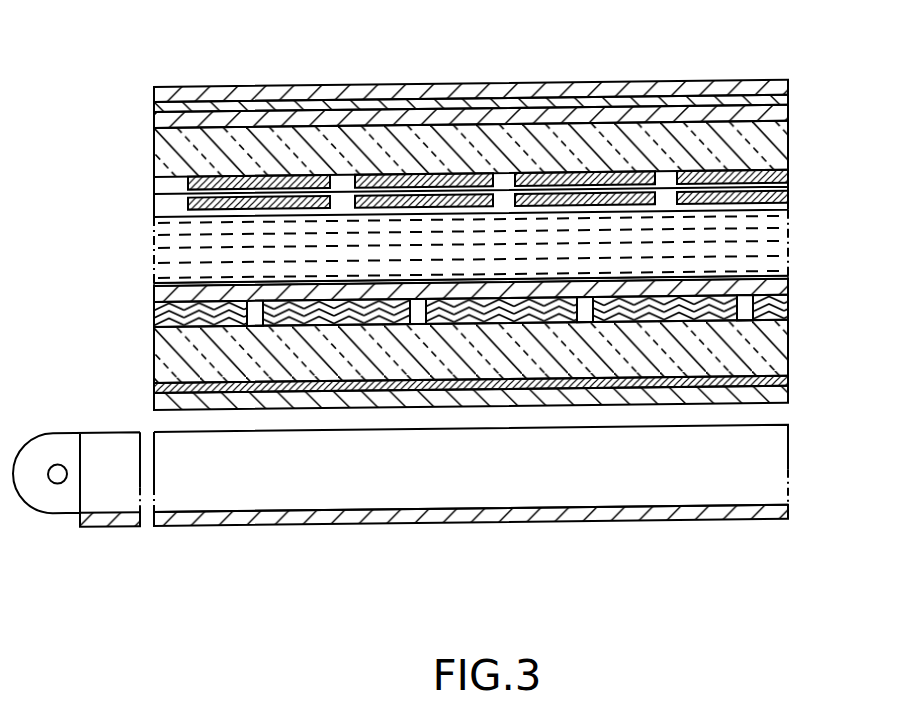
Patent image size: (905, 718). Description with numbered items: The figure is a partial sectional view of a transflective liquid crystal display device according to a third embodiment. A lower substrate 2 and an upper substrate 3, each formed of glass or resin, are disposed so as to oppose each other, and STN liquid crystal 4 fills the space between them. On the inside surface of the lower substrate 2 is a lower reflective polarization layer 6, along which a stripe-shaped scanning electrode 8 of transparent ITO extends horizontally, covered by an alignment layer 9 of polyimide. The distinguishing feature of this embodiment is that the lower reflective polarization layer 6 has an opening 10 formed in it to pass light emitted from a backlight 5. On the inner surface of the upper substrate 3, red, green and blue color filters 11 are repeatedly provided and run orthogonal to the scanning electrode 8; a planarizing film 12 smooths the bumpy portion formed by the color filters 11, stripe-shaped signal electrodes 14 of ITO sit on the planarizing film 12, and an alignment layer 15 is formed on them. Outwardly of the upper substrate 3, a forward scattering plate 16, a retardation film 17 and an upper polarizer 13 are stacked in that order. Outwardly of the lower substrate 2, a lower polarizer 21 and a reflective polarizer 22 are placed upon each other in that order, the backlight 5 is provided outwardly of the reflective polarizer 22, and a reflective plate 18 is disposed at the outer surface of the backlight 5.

The lower substrate 2 is at (778, 352).
The upper substrate 3 is at (778, 157).
The STN liquid crystal 4 is at (776, 249).
The backlight 5 is at (778, 476).
The lower reflective polarization layer 6 is at (156, 310).
The scanning electrode 8 is at (780, 300).
The alignment layer 9 is at (788, 289).
The opening 10 is at (255, 328).
The color filters 11 is at (282, 180).
The planarizing film 12 is at (530, 107).
The upper polarizer 13 is at (788, 88).
The signal electrodes 14 is at (236, 207).
The alignment layer 15 is at (530, 120).
The forward scattering plate 16 is at (788, 117).
The retardation film 17 is at (788, 106).
The reflective plate 18 is at (788, 515).
The lower polarizer 21 is at (788, 388).
The reflective polarizer 22 is at (788, 401).